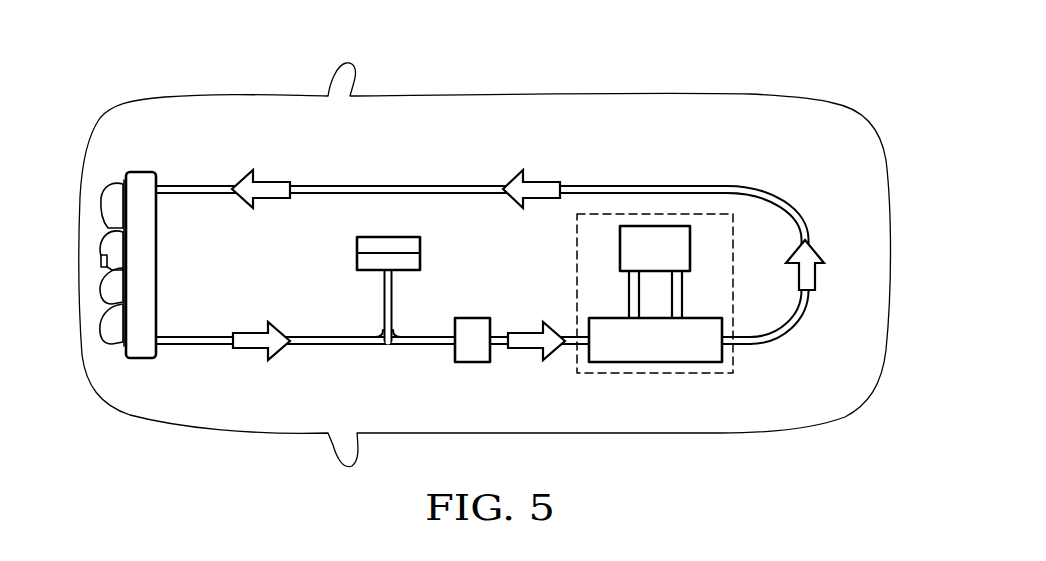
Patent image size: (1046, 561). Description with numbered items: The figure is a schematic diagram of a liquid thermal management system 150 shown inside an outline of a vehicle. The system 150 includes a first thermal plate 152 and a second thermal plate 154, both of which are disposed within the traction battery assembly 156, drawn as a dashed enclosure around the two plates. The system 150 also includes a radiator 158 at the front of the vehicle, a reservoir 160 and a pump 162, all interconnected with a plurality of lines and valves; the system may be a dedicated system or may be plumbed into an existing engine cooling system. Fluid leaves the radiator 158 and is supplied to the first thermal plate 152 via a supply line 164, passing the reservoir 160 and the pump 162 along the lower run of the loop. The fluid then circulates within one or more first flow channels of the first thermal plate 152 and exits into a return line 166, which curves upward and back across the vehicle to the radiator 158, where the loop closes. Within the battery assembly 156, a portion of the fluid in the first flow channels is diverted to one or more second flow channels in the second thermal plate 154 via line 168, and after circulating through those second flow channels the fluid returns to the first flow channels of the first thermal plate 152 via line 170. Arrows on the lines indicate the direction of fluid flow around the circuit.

The liquid thermal management system 150 is at (228, 62).
The first thermal plate 152 is at (672, 354).
The second thermal plate 154 is at (672, 260).
The traction battery assembly 156 is at (577, 262).
The radiator 158 is at (140, 172).
The reservoir 160 is at (357, 248).
The pump 162 is at (462, 318).
The supply line 164 is at (497, 346).
The return line 166 is at (787, 203).
The line 168 is at (629, 308).
The line 170 is at (682, 281).